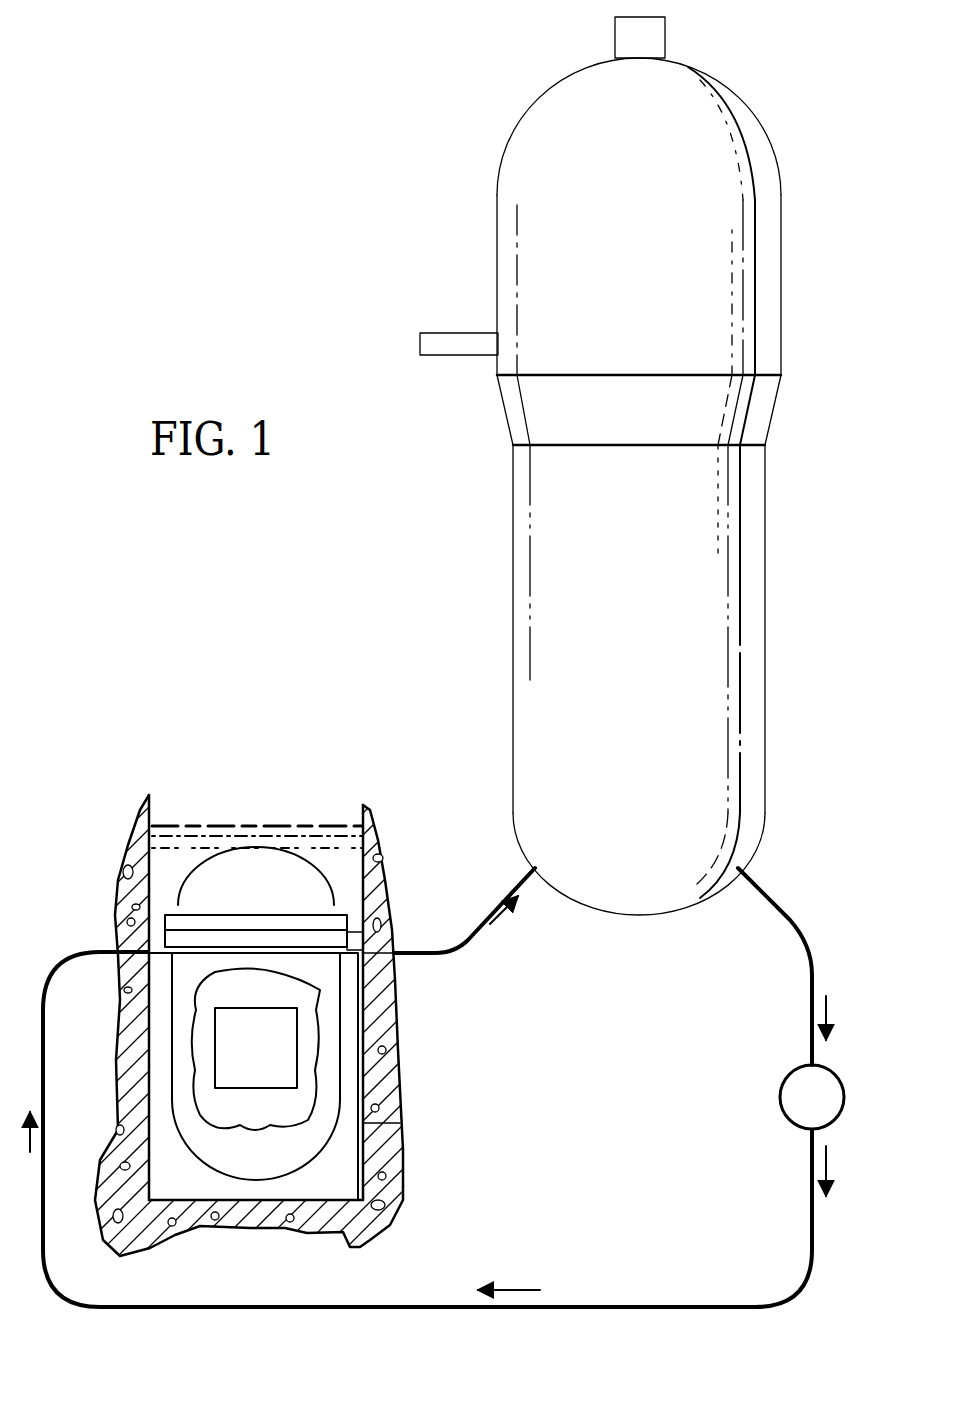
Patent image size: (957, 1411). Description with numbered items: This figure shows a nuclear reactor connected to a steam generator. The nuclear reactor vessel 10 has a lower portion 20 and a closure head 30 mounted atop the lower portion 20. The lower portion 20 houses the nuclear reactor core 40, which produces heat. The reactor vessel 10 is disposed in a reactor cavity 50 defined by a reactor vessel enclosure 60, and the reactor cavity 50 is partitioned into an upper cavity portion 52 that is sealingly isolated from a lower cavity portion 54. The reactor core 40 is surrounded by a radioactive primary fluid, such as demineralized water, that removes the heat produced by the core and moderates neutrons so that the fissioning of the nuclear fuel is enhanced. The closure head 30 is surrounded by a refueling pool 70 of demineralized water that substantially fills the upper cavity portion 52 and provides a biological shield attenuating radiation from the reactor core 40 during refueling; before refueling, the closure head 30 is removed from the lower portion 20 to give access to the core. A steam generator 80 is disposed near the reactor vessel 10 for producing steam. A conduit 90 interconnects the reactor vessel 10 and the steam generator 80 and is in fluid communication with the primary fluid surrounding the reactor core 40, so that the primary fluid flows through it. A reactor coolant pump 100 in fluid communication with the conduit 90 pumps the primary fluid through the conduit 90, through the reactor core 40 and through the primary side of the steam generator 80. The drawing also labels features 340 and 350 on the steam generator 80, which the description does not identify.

The nuclear reactor vessel 10 is at (168, 897).
The lower portion 20 is at (375, 983).
The closure head 30 is at (320, 903).
The nuclear reactor core 40 is at (212, 1047).
The reactor cavity 50 is at (400, 1123).
The upper cavity portion 52 is at (377, 868).
The lower cavity portion 54 is at (378, 1027).
The reactor vessel enclosure 60 is at (130, 848).
The refueling pool 70 is at (262, 825).
The steam generator 80 is at (480, 158).
The conduit 90 is at (516, 888).
The reactor coolant pump 100 is at (812, 1097).
The vessel top fitting 340 is at (615, 40).
The vessel side port 350 is at (460, 333).